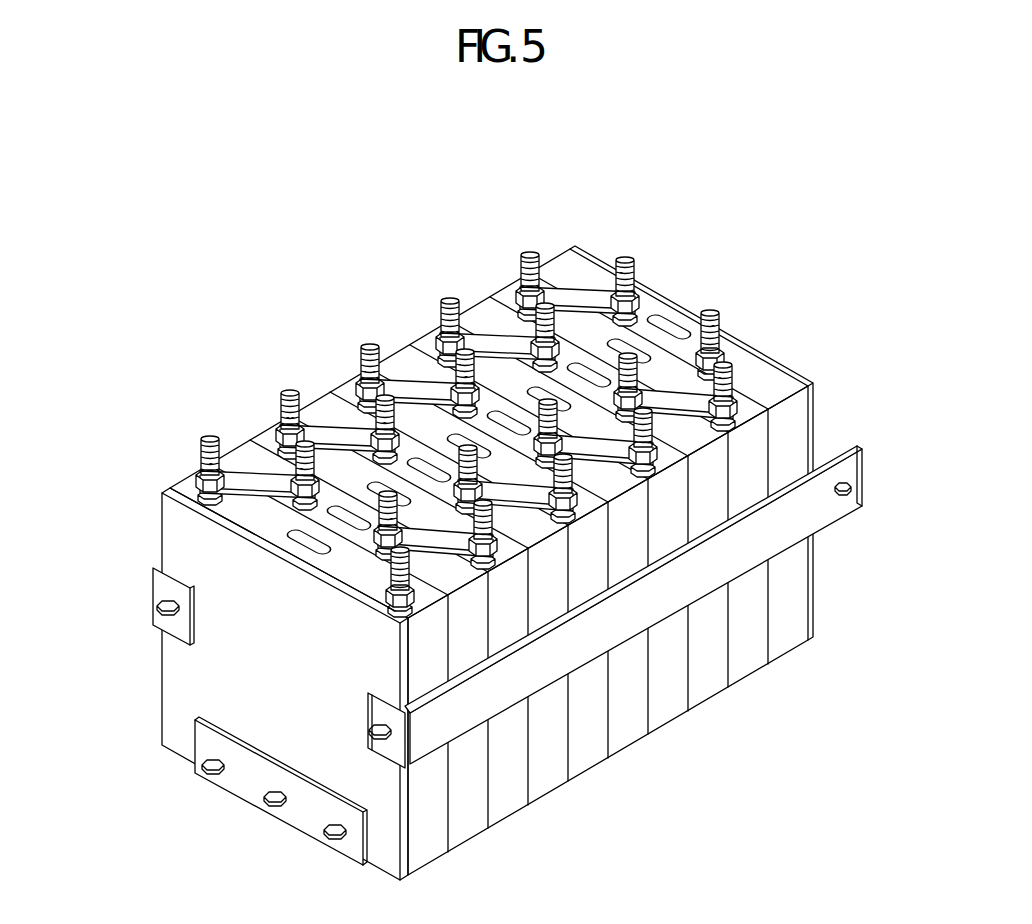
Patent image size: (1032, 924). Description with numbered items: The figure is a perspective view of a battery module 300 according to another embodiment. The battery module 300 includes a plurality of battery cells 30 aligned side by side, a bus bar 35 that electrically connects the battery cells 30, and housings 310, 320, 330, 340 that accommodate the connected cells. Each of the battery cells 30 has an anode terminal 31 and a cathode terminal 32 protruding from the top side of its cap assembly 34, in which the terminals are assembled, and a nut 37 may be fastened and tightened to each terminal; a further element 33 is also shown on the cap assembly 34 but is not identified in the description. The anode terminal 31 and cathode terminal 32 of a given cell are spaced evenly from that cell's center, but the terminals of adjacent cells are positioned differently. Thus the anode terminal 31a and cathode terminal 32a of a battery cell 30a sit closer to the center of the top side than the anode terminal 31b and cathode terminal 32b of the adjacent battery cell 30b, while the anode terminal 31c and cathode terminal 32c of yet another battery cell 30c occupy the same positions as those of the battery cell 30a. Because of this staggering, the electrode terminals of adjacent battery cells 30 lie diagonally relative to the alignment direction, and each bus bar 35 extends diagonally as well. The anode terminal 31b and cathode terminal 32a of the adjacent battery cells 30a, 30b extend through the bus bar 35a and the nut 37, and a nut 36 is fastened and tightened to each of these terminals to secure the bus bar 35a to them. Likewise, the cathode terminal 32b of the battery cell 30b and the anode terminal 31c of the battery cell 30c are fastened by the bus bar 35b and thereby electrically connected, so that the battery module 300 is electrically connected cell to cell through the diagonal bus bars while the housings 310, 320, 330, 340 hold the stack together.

The battery module 300 is at (226, 270).
The battery cells 30 is at (742, 603).
The battery cell 30a is at (435, 845).
The adjacent battery cell 30b is at (477, 828).
The yet another battery cell 30c is at (520, 805).
The anode terminal 31 is at (628, 251).
The anode terminal 31a is at (397, 552).
The anode terminal 31b is at (258, 476).
The anode terminal 31c is at (428, 528).
The cathode terminal 32 is at (713, 301).
The cathode terminal 32a is at (200, 438).
The cathode terminal 32b is at (387, 432).
The cathode terminal 32c is at (293, 392).
The vent 33 is at (662, 320).
The cap assembly 34 is at (752, 368).
The bus bar 35 is at (491, 328).
The bus bar 35a is at (245, 468).
The bus bar 35b is at (386, 520).
The nut 36 is at (253, 470).
The nut 37 is at (180, 492).
The housing 310 is at (186, 689).
The housing 320 is at (823, 577).
The housing 330 is at (510, 682).
The housing 340 is at (252, 772).